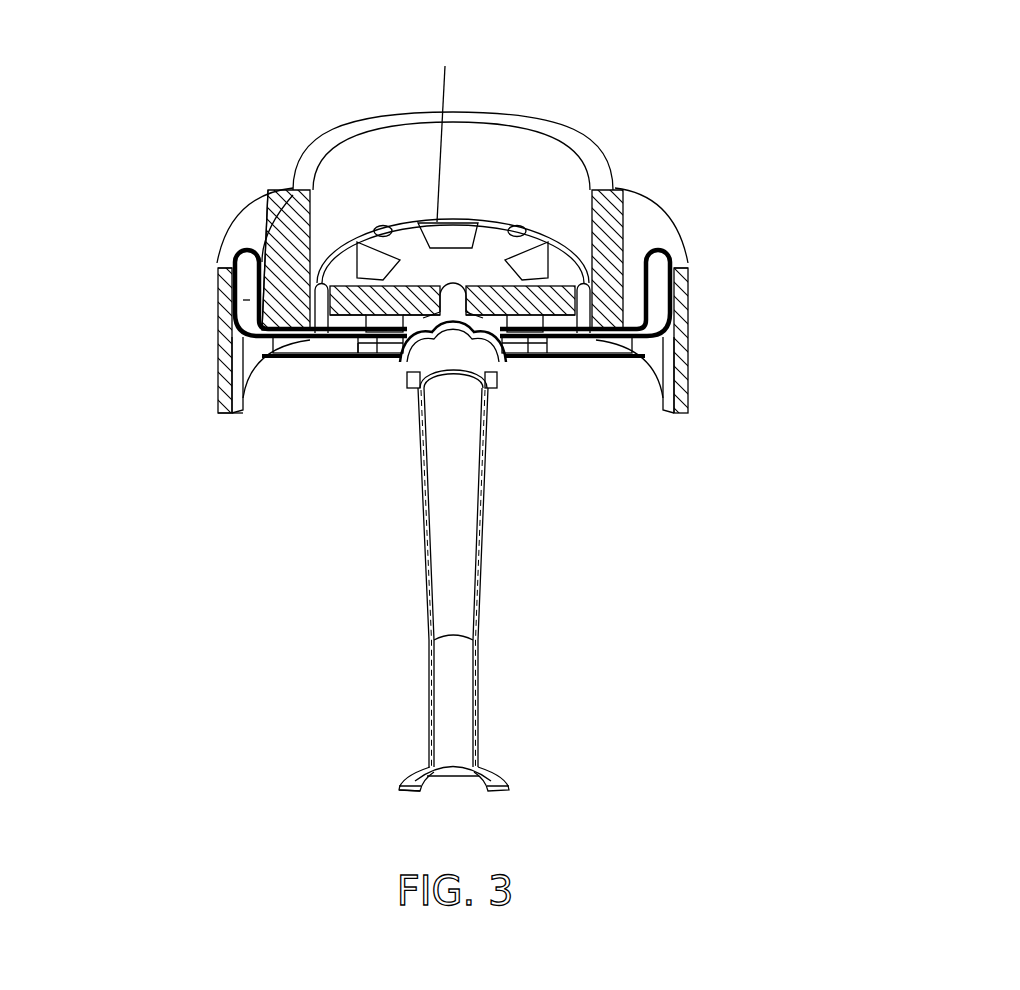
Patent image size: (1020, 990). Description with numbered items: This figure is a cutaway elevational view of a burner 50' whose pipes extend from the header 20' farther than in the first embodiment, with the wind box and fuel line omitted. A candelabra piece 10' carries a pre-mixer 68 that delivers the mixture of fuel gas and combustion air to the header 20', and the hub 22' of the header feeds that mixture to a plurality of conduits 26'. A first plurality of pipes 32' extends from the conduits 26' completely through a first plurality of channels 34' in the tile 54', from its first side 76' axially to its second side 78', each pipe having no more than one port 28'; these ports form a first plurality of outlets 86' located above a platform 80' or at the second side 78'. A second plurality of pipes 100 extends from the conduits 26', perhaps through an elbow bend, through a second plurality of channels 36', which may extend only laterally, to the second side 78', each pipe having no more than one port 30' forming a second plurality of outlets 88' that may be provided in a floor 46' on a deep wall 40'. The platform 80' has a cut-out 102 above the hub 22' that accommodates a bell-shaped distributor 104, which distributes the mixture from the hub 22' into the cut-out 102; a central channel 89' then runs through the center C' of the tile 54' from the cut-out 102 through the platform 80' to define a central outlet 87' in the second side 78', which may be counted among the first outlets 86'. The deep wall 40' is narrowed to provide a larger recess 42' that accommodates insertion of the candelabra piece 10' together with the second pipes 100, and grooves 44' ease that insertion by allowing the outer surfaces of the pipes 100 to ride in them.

The candelabra piece 10' is at (354, 658).
The header 20' is at (486, 410).
The hub 22' is at (401, 563).
The conduits 26' is at (468, 405).
The ports 28' is at (500, 207).
The ports 30' is at (460, 278).
The first plurality of pipes 32' is at (537, 356).
The first plurality of channels 34' is at (432, 232).
The second plurality of channels 36' is at (382, 284).
The deep wall 40' is at (405, 340).
The recess 42' is at (453, 405).
The grooves 44' is at (456, 402).
The floor 46' is at (250, 229).
The burner 50' is at (391, 191).
The tile 54' is at (182, 408).
The pre-mixer 68 is at (427, 565).
The first side 76' is at (453, 377).
The second side 78' is at (453, 110).
The platform 80' is at (456, 361).
The first plurality of outlets 86' is at (459, 196).
The central outlet 87' is at (463, 160).
The second plurality of outlets 88' is at (228, 226).
The central channel 89' is at (477, 360).
The second plurality of pipes 100 is at (243, 300).
The cut-out 102 is at (380, 355).
The bell-shaped distributor 104 is at (507, 400).
The center C' is at (448, 129).